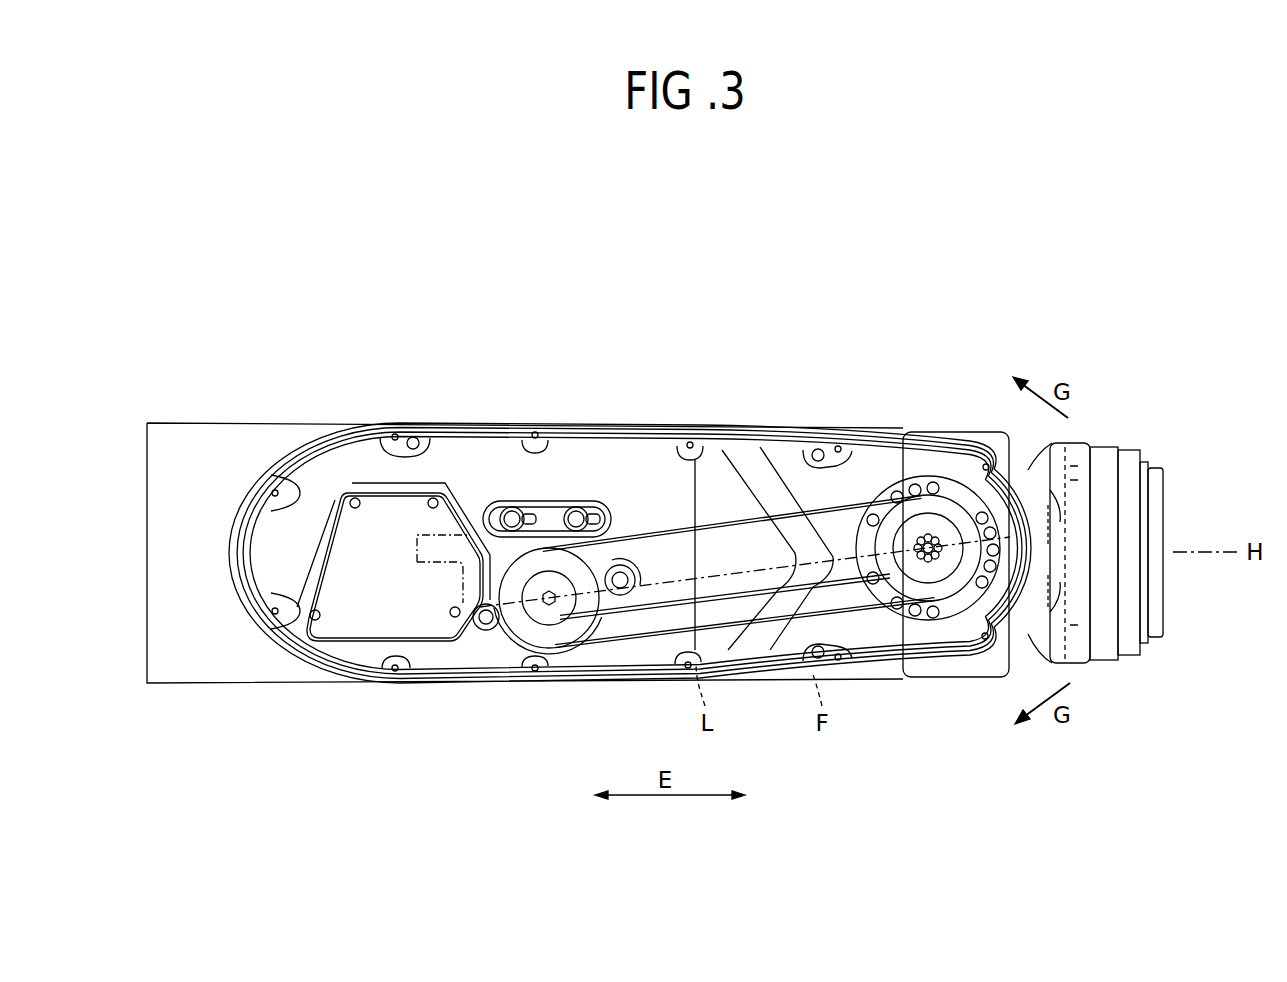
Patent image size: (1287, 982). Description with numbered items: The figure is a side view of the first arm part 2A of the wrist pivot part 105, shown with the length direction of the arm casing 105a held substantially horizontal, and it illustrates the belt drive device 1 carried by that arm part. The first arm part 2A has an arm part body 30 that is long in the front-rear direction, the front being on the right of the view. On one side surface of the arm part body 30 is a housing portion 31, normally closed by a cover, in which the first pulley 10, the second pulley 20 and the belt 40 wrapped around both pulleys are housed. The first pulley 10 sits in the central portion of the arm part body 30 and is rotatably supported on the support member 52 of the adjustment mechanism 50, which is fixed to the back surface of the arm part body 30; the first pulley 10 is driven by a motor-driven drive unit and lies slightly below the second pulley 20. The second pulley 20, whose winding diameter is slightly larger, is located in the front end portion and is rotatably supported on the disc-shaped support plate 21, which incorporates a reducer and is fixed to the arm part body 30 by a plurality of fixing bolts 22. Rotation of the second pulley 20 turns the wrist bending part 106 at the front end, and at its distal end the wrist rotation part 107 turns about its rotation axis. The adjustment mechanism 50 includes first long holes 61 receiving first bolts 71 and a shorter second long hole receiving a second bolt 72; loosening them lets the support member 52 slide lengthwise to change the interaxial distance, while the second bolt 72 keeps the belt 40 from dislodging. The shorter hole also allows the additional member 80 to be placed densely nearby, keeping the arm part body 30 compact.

The belt drive device 1 is at (664, 496).
The first arm part 2A is at (228, 423).
The first pulley 10 is at (565, 640).
The second pulley 20 is at (953, 594).
The support plate 21 is at (1038, 546).
The fixing bolts 22 is at (931, 482).
The arm part body 30 is at (252, 682).
The housing portion 31 is at (730, 488).
The belt 40 is at (790, 512).
The adjustment mechanism 50 is at (553, 482).
The support member 52 is at (497, 503).
The first long holes 61 is at (512, 510).
The first bolt 71 is at (500, 515).
The second bolt 72 is at (622, 565).
The additional member 80 is at (373, 580).
The wrist pivot part 105 is at (268, 348).
The arm casing 105a is at (358, 408).
The wrist bending part 106 is at (967, 430).
The wrist rotation part 107 is at (1138, 450).